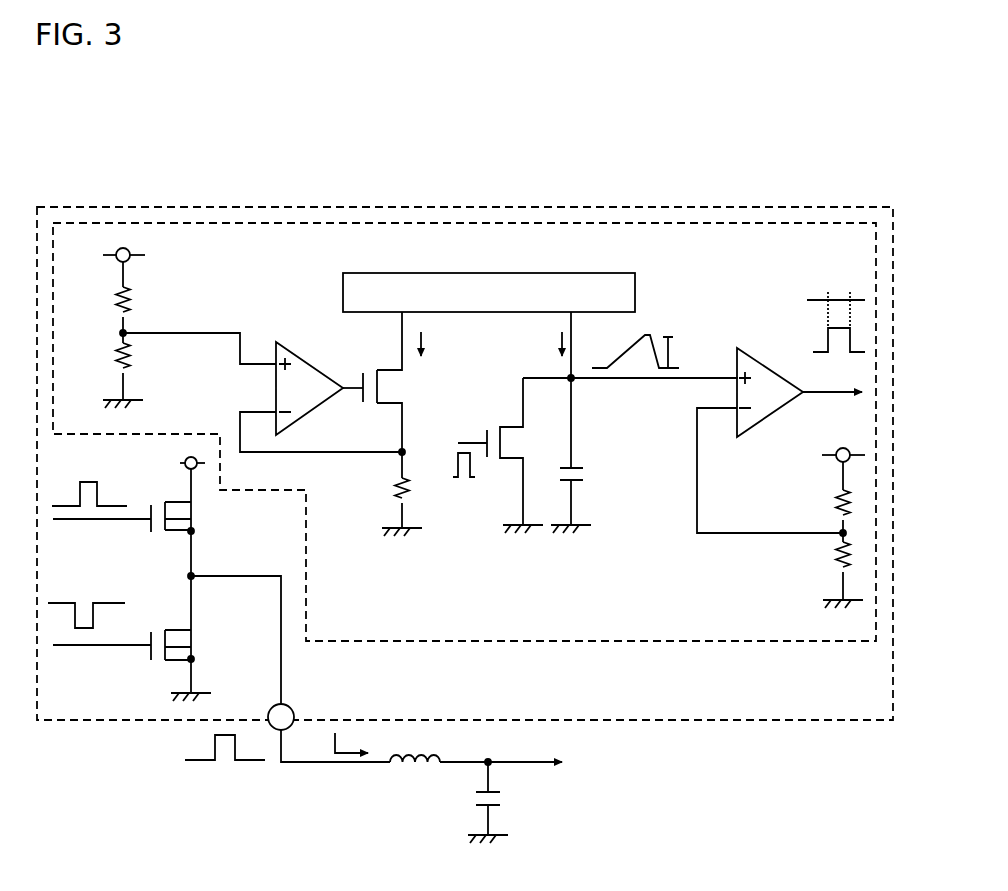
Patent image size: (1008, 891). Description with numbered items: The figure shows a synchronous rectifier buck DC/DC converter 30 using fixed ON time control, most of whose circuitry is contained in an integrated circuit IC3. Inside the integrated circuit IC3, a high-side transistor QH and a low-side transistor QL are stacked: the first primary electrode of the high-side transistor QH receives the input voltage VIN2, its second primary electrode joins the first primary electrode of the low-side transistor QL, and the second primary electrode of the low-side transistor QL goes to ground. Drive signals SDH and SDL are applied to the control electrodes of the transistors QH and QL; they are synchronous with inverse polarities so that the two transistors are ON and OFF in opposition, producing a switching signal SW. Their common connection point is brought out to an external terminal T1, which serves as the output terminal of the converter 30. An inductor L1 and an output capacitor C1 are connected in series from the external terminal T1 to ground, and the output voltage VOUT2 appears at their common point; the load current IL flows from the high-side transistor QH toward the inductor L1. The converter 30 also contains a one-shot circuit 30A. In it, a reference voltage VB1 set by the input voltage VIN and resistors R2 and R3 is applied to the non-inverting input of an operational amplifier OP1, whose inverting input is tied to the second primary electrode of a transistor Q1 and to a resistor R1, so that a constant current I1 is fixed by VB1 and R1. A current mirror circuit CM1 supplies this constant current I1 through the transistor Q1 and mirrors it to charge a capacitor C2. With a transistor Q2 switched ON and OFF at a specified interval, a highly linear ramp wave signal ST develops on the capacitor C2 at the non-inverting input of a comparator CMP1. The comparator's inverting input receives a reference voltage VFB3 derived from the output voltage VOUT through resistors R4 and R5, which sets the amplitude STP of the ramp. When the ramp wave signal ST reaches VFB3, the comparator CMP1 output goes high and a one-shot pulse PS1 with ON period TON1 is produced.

The DC/DC converter 30 is at (467, 194).
The one-shot circuit 30A is at (650, 643).
The integrated circuit IC3 is at (690, 720).
The input voltage VIN is at (106, 256).
The input voltage VIN2 is at (169, 464).
The resistor R1 is at (420, 491).
The resistor R2 is at (107, 307).
The resistor R3 is at (107, 364).
The resistor R4 is at (825, 503).
The resistor R5 is at (825, 563).
The reference voltage VB1 is at (199, 336).
The operational amplifier OP1 is at (309, 376).
The transistor Q1 is at (399, 395).
The transistor Q2 is at (498, 451).
The constant current I1 is at (491, 345).
The current mirror circuit CM1 is at (489, 280).
The capacitor C2 is at (589, 496).
The ramp wave signal ST is at (633, 351).
The amplitude of ramp wave signal STP is at (687, 353).
The comparator CMP1 is at (767, 379).
The one-shot pulse PS1 is at (842, 358).
The ON period TON1 is at (813, 315).
The reference voltage VFB3 is at (740, 470).
The output voltage VOUT is at (835, 440).
The output voltage VOUT2 is at (501, 748).
The high-side transistor QH is at (141, 520).
The low-side transistor QL is at (139, 646).
The drive signal SDH is at (89, 481).
The drive signal SDL is at (86, 603).
The external terminal T1 is at (243, 753).
The switching signal SW is at (225, 763).
The load current IL is at (351, 739).
The inductor L1 is at (415, 780).
The output capacitor C1 is at (504, 798).